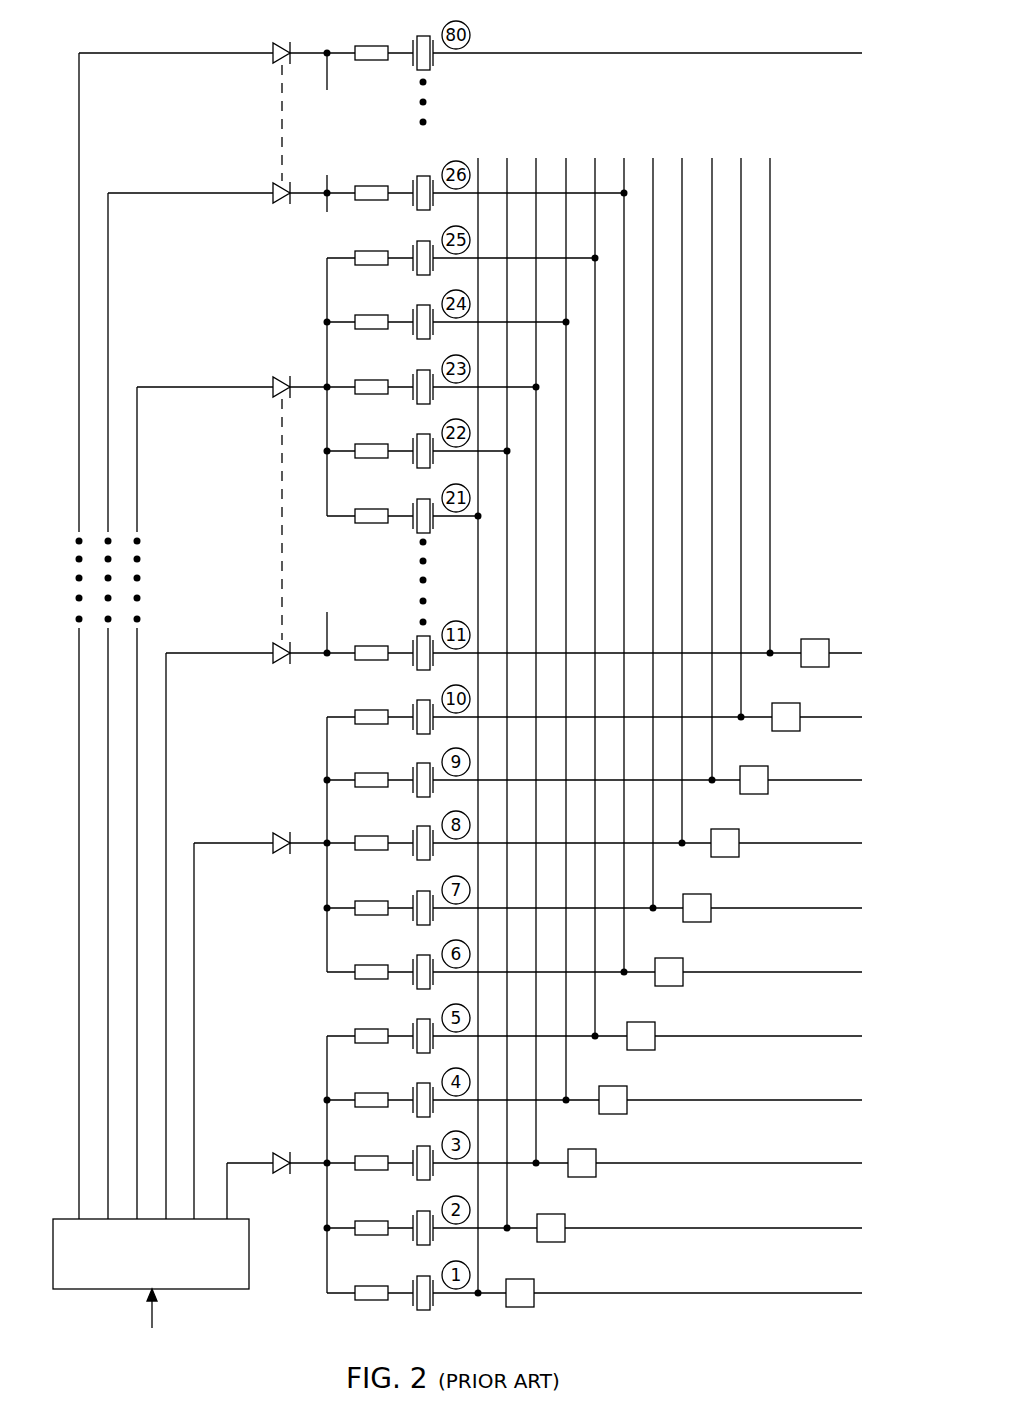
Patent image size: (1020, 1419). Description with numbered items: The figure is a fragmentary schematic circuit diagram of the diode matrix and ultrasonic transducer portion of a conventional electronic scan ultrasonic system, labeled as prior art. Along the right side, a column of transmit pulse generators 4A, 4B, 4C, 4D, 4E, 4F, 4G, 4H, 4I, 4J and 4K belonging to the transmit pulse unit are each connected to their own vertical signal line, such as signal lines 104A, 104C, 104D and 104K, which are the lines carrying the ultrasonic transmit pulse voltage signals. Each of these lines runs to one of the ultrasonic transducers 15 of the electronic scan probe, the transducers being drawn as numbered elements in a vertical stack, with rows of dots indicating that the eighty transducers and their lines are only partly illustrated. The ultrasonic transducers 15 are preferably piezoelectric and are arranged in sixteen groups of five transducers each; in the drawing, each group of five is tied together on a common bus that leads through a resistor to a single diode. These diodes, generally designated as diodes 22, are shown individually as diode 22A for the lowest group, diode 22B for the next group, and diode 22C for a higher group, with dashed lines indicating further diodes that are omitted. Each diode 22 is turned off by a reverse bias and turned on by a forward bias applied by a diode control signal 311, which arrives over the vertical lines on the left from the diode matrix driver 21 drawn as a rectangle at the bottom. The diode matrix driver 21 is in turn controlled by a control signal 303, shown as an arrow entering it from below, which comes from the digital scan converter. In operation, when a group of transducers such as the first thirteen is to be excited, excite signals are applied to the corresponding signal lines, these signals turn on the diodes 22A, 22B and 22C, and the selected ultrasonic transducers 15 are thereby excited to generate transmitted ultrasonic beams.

The diode 22 is at (279, 45).
The diode 22A is at (279, 1151).
The diode 22B is at (283, 831).
The diode 22C is at (273, 643).
The ultrasonic transducer 15 is at (418, 43).
The diode matrix driver 21 is at (102, 1291).
The control signal 303 is at (172, 1314).
The diode control signal 311 is at (195, 1077).
The signal line 104A is at (495, 1296).
The signal line 104C is at (517, 1231).
The signal line 104D is at (555, 1166).
The signal line 104K is at (773, 492).
The transmit pulse generator 4A is at (534, 1283).
The transmit pulse generator 4B is at (565, 1219).
The transmit pulse generator 4C is at (596, 1154).
The transmit pulse generator 4D is at (627, 1091).
The transmit pulse generator 4E is at (655, 1027).
The transmit pulse generator 4F is at (683, 963).
The transmit pulse generator 4G is at (711, 899).
The transmit pulse generator 4H is at (739, 834).
The transmit pulse generator 4I is at (768, 771).
The transmit pulse generator 4J is at (800, 707).
The transmit pulse generator 4K is at (829, 643).